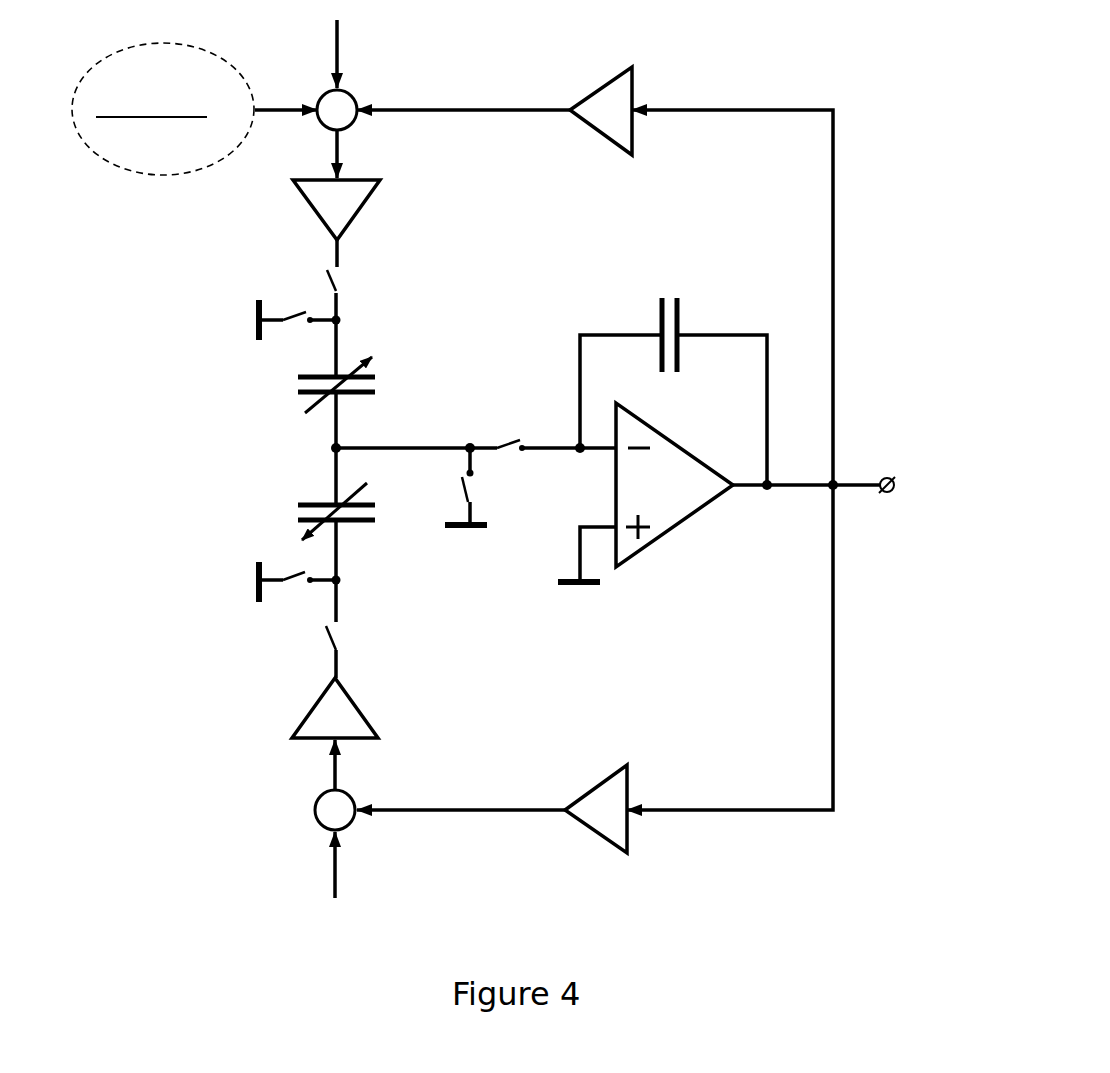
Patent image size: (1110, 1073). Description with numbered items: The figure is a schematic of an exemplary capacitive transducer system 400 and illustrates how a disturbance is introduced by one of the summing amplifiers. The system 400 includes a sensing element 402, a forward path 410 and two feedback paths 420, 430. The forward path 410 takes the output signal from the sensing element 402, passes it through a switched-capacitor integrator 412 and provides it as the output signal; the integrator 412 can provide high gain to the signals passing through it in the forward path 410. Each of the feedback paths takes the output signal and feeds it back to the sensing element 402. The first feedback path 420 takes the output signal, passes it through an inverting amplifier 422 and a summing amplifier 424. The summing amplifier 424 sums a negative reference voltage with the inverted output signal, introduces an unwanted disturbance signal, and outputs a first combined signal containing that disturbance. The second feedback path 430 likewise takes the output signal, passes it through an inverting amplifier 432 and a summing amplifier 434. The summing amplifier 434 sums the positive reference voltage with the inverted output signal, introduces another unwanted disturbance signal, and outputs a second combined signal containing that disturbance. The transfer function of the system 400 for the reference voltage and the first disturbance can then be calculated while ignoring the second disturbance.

The capacitive transducer system 400 is at (727, 48).
The sensing element 402 is at (237, 435).
The forward path 410 is at (598, 295).
The switched-capacitor integrator 412 is at (687, 552).
The first feedback path 420 is at (853, 205).
The inverting amplifier 422 is at (602, 85).
The summing amplifier 424 is at (347, 93).
The second feedback path 430 is at (848, 660).
The inverting amplifier 432 is at (600, 785).
The summing amplifier 434 is at (347, 795).